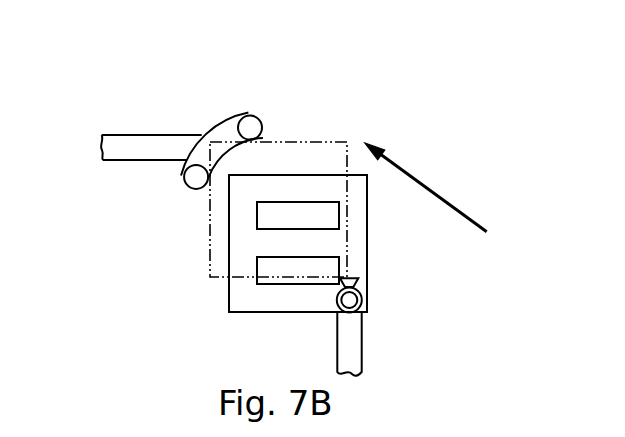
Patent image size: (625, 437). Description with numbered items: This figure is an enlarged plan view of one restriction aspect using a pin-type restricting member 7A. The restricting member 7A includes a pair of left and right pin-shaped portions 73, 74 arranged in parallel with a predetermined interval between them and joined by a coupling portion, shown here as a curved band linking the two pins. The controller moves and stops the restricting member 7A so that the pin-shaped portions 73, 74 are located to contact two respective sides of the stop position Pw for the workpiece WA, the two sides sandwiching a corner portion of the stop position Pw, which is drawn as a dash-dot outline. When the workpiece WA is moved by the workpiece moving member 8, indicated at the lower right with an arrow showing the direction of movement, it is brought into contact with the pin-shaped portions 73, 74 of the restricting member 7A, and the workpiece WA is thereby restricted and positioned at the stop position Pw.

The restricting member 7A is at (212, 114).
The pin-shaped portion 73 is at (194, 178).
The pin-shaped portion 74 is at (249, 127).
The stop position Pw is at (210, 233).
The workpiece WA is at (358, 243).
The workpiece moving member 8 is at (363, 293).